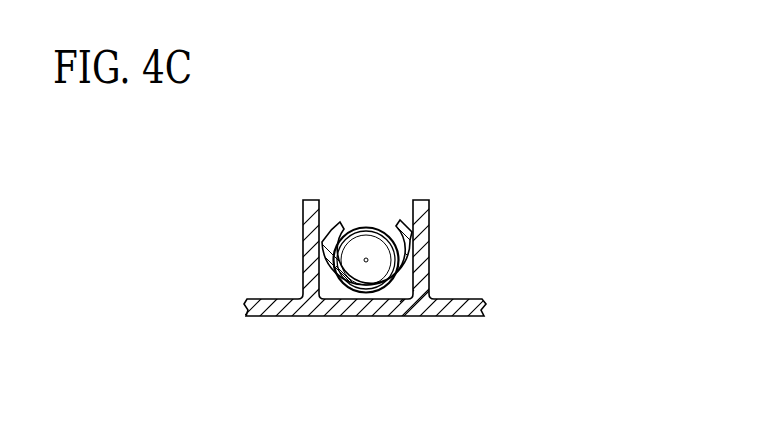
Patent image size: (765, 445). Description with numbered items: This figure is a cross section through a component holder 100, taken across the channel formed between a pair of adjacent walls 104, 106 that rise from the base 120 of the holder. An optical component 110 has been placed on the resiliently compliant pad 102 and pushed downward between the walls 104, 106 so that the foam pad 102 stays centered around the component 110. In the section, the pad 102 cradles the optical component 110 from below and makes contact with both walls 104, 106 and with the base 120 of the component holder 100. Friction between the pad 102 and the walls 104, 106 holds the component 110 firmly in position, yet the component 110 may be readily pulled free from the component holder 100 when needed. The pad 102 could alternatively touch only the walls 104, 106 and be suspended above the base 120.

The component holder 100 is at (431, 128).
The resiliently compliant member 102 is at (334, 234).
The wall 104 is at (430, 263).
The wall 106 is at (302, 268).
The optical component 110 is at (373, 272).
The base 120 is at (328, 317).